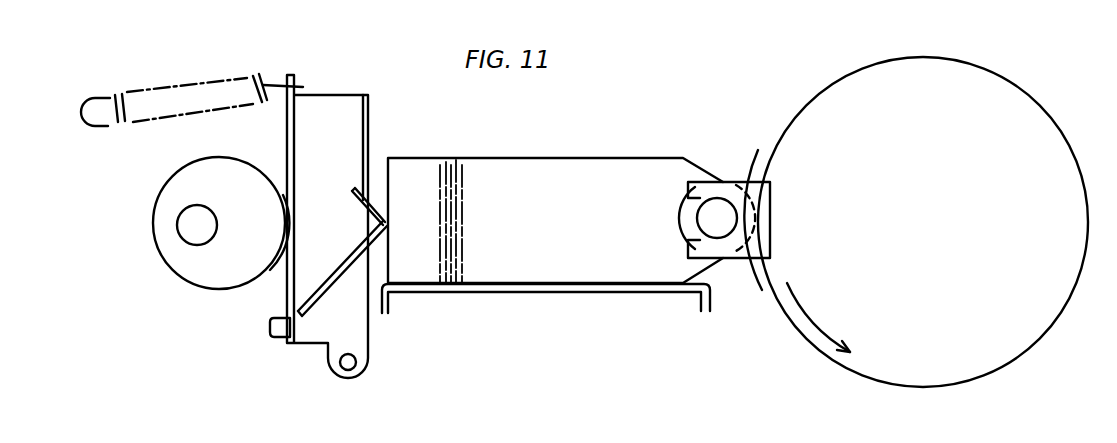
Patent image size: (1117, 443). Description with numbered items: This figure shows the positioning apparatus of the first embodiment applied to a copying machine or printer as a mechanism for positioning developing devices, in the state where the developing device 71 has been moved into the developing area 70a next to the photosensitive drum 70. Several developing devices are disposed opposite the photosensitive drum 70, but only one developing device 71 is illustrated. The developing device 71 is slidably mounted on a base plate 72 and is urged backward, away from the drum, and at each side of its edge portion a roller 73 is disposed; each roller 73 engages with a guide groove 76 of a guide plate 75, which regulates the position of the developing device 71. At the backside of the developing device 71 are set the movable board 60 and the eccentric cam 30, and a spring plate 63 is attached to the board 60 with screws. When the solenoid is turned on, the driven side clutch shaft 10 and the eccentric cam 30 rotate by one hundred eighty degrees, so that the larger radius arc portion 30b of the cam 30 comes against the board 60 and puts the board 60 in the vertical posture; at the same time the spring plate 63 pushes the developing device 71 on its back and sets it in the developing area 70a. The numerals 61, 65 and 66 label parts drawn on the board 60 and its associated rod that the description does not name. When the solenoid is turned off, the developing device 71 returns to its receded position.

The driven side clutch shaft 10 is at (182, 238).
The eccentric cam 30 is at (158, 194).
The larger radius arc portion 30b is at (288, 208).
The movable board 60 is at (332, 94).
The strut member 61 is at (287, 304).
The spring plate 63 is at (378, 200).
The pivot hole 65 is at (357, 364).
The actuating rod 66 is at (260, 74).
The photosensitive drum 70 is at (800, 112).
The developing area 70a is at (766, 222).
The developing device 71 is at (548, 158).
The base plate 72 is at (546, 294).
The roller 73 is at (699, 212).
The guide plate 75 is at (770, 198).
The guide groove 76 is at (678, 230).